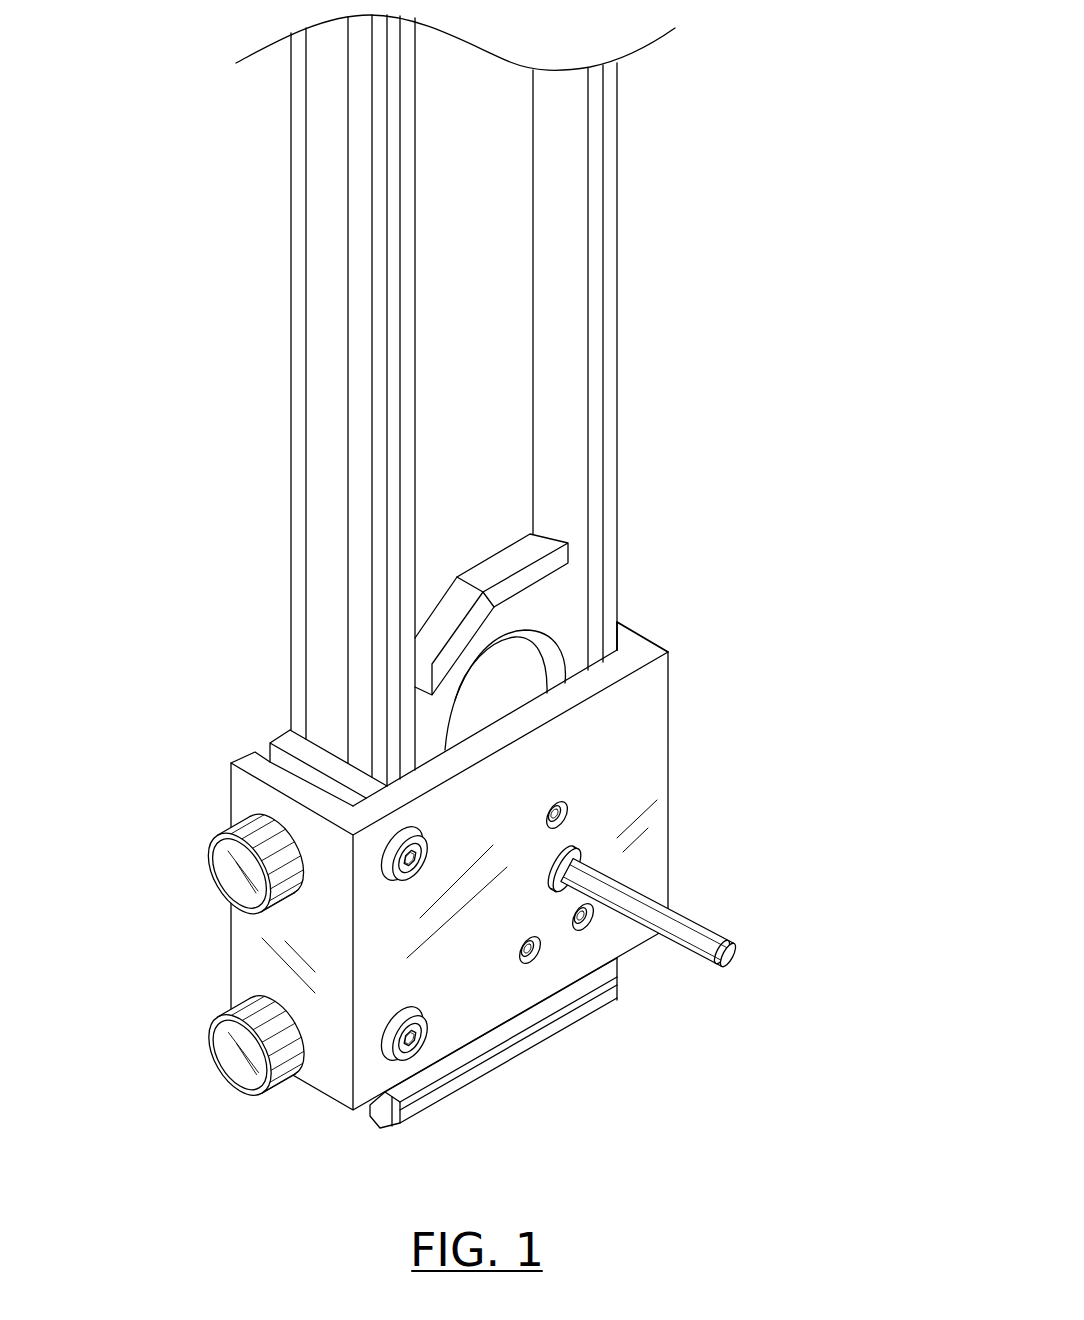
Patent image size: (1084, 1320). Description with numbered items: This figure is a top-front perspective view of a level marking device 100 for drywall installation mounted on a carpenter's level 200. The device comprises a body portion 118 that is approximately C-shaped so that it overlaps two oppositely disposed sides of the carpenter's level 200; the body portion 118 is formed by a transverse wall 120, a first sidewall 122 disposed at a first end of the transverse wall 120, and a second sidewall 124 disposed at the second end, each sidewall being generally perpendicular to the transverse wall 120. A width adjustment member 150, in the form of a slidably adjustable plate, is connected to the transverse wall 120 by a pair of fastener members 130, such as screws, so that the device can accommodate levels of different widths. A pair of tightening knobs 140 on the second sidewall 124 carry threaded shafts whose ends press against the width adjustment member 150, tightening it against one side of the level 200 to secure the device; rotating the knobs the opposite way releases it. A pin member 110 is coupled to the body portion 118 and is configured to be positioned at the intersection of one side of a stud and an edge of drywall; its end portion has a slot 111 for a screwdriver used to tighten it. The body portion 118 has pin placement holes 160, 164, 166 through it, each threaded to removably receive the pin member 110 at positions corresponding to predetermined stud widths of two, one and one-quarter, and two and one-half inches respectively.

The level marking device 100 is at (280, 1133).
The pin member 110 is at (700, 928).
The slot 111 is at (733, 968).
The body portion 118 is at (447, 1027).
The transverse wall 120 is at (640, 703).
The first sidewall 122 is at (635, 650).
The second sidewall 124 is at (258, 772).
The fastener members 130 is at (428, 858).
The tightening knobs 140 is at (213, 1030).
The width adjustment member 150 is at (286, 732).
The pin placement hole 160 is at (560, 803).
The pin placement hole 164 is at (583, 929).
The pin placement hole 166 is at (528, 962).
The carpenter's level 200 is at (616, 449).